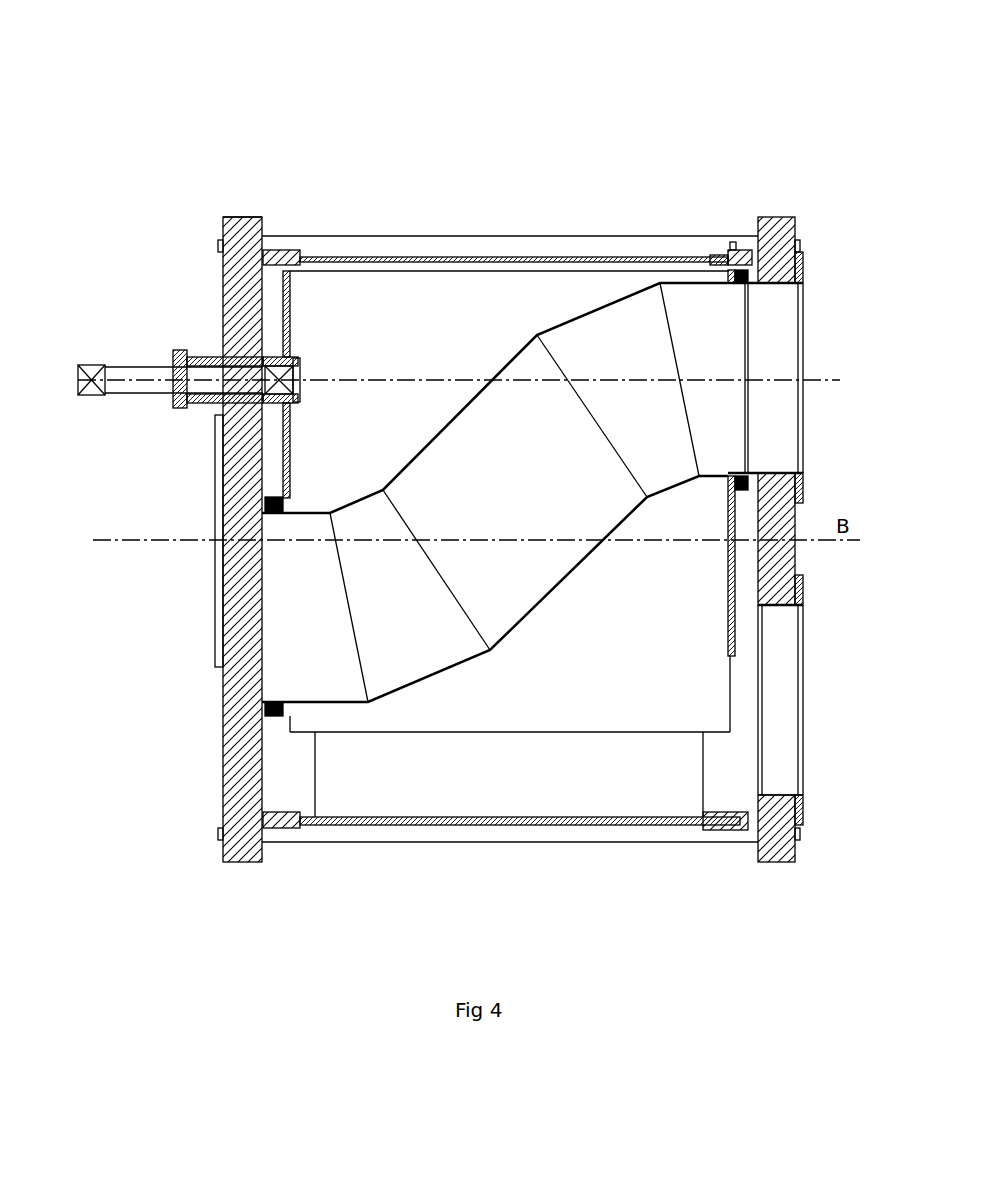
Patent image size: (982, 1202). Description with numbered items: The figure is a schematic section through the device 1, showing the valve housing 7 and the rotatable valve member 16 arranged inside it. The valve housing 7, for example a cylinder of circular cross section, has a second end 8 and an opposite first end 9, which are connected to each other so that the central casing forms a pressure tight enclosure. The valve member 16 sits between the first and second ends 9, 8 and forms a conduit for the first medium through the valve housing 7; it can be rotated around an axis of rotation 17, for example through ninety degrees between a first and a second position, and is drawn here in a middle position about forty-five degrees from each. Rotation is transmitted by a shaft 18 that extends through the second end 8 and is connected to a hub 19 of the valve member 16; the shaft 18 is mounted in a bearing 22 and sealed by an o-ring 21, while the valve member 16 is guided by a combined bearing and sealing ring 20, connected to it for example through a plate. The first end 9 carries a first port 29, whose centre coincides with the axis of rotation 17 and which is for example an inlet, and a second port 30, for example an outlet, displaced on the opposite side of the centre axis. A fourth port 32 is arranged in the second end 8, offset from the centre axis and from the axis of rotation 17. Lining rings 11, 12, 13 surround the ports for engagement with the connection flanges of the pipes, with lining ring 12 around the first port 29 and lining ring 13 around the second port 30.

The device 1 is at (563, 76).
The valve housing 7 is at (283, 795).
The second end 8 is at (243, 863).
The first end 9 is at (772, 862).
The lining ring 11 is at (218, 635).
The lining ring 12 is at (804, 270).
The lining ring 13 is at (804, 820).
The valve member 16 is at (578, 348).
The axis of rotation 17 is at (455, 378).
The shaft 18 is at (153, 368).
The hub 19 is at (300, 350).
The ring 20 is at (735, 255).
The o-ring 21 is at (187, 350).
The bearing 22 is at (243, 320).
The first port 29 is at (792, 366).
The second port 30 is at (792, 700).
The fourth port 32 is at (197, 552).